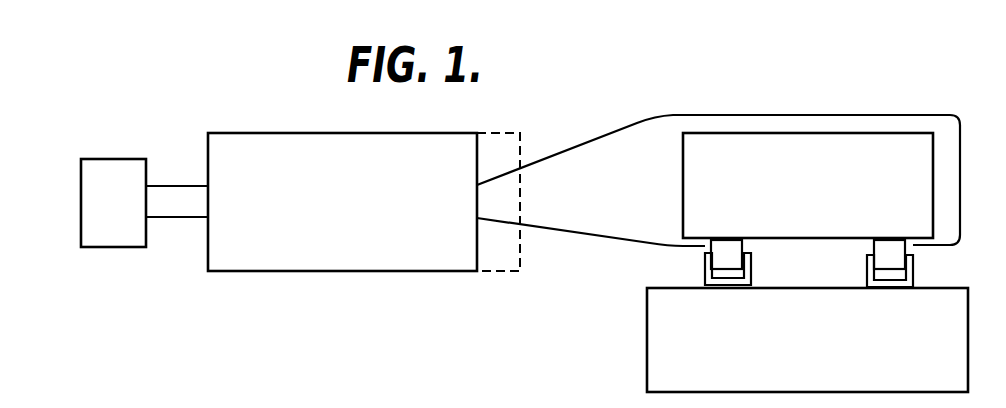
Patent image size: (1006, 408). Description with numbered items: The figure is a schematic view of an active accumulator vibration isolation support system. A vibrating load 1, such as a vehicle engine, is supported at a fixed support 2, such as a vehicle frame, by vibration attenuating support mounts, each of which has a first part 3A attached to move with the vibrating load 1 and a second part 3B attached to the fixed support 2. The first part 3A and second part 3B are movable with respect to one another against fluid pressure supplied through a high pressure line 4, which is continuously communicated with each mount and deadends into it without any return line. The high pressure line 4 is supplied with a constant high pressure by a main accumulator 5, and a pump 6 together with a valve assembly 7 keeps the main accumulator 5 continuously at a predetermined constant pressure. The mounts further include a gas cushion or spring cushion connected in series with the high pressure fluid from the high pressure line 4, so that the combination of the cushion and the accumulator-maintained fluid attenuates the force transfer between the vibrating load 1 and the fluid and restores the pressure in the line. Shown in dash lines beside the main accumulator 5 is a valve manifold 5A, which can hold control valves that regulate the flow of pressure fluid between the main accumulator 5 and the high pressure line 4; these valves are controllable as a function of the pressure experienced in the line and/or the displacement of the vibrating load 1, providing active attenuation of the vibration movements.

The vibrating load 1 is at (818, 204).
The fixed support 2 is at (818, 351).
The first part 3A is at (867, 246).
The second part 3B is at (935, 270).
The high pressure line 4 is at (573, 151).
The main accumulator 5 is at (348, 218).
The valve manifold 5A is at (521, 152).
The pump 6 is at (121, 223).
The valve assembly 7 is at (186, 208).